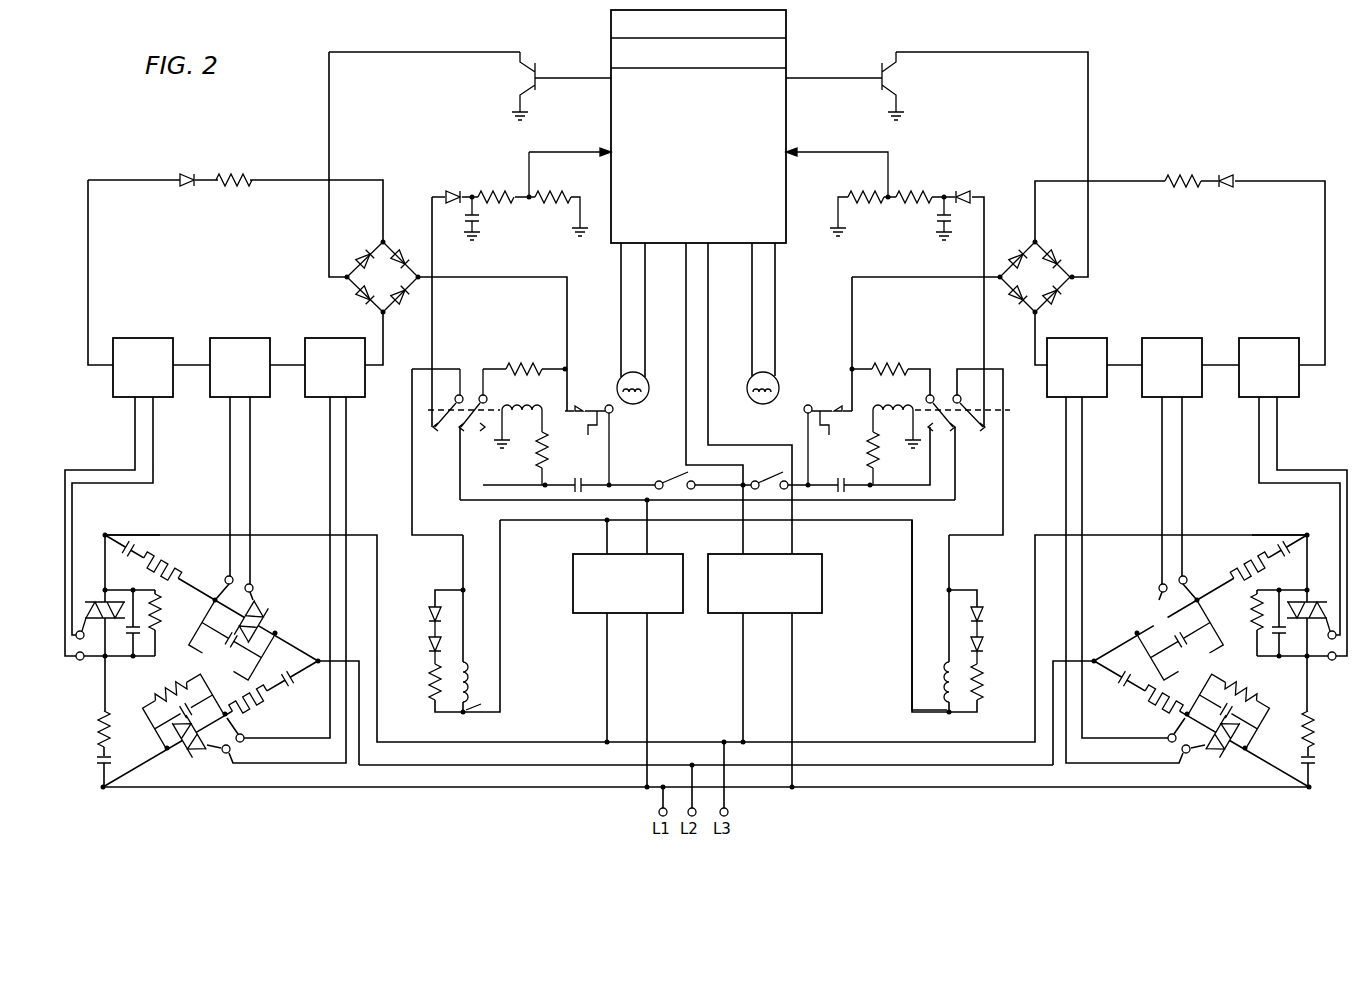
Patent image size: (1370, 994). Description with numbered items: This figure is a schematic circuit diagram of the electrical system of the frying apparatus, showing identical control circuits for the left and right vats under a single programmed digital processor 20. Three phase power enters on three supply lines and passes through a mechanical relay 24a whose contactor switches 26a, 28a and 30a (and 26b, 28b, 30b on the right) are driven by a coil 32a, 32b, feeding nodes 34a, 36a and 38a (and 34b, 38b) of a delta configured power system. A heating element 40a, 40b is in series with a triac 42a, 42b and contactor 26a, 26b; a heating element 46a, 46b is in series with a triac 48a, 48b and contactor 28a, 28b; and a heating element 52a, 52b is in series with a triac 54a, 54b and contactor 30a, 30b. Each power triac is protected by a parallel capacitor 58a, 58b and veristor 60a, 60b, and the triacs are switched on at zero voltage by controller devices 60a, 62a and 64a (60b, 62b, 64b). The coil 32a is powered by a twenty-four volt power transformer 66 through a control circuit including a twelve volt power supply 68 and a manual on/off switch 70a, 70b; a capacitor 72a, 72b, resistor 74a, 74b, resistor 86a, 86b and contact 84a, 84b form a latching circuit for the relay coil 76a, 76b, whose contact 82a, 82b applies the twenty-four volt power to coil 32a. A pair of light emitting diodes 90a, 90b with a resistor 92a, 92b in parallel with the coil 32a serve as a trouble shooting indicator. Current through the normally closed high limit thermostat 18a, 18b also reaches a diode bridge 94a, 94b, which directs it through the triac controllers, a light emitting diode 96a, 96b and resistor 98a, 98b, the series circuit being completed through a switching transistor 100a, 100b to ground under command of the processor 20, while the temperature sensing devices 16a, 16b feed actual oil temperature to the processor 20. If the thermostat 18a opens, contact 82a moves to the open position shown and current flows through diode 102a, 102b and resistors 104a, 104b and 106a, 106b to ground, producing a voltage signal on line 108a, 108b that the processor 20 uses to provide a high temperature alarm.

The programmed digital processor 20 is at (708, 224).
The switching transistor 100a is at (535, 64).
The switching transistor 100b is at (895, 76).
The light emitting diode 96a is at (187, 172).
The light emitting diode 96b is at (1230, 173).
The resistor 98a is at (236, 172).
The resistor 98b is at (1183, 173).
The diode 102a is at (452, 188).
The diode 102b is at (965, 188).
The resistor 104a is at (498, 203).
The resistor 104b is at (912, 203).
The resistor 106a is at (553, 205).
The resistor 106b is at (851, 192).
The line 108a is at (526, 152).
The line 108b is at (891, 156).
The diode bridge 94a is at (356, 296).
The diode bridge 94b is at (1080, 290).
The triac controller device 64a is at (143, 367).
The triac controller device 64b is at (1269, 367).
The triac controller device 62a is at (240, 367).
The triac controller device 62b is at (1172, 367).
The triac controller device 60a is at (162, 688).
The triac controller device 60b is at (1265, 683).
The relay contact 82a is at (428, 412).
The relay contact 82b is at (990, 410).
The relay contact 84a is at (460, 440).
The relay contact 84b is at (955, 440).
The resistor 86a is at (524, 362).
The resistor 86b is at (892, 362).
The relay coil 76a is at (528, 404).
The relay coil 76b is at (893, 404).
The resistor 74a is at (540, 450).
The resistor 74b is at (876, 455).
The capacitor 72a is at (596, 461).
The capacitor 72b is at (856, 465).
The manual on/off switch 70a is at (673, 478).
The manual on/off switch 70b is at (770, 478).
The high limit thermostat 18a is at (581, 402).
The high limit thermostat 18b is at (835, 402).
The temperature sensing device 16a is at (645, 402).
The temperature sensing device 16b is at (759, 403).
The 24 volt power transformer 66 is at (573, 590).
The 12 volt power supply 68 is at (822, 590).
The light emitting diodes 90a is at (428, 640).
The light emitting diodes 90b is at (985, 640).
The resistor 92a is at (429, 682).
The resistor 92b is at (979, 683).
The coil 32a is at (471, 685).
The coil 32b is at (941, 685).
The mechanical relay 24a is at (476, 710).
The node 38a is at (105, 531).
The node 38b is at (1308, 531).
The contactor switch 28a is at (129, 546).
The contactor switch 28b is at (1285, 548).
The heating element 46a is at (171, 566).
The heating element 46b is at (1246, 570).
The triac 48a is at (255, 602).
The triac 48b is at (1158, 602).
The node 36a is at (316, 652).
The contactor switch 26a is at (290, 681).
The contactor switch 26b is at (1118, 681).
The heating element 40a is at (268, 700).
The heating element 40b is at (1145, 701).
The triac 42a is at (196, 751).
The triac 42b is at (1221, 755).
The capacitor 58a is at (133, 658).
The capacitor 58b is at (1240, 690).
The triac 54a is at (93, 600).
The triac 54b is at (1320, 600).
The heating element 52a is at (98, 729).
The heating element 52b is at (1315, 728).
The contactor switch 30a is at (98, 762).
The contactor switch 30b is at (1305, 762).
The node 34a is at (106, 795).
The node 34b is at (1305, 791).